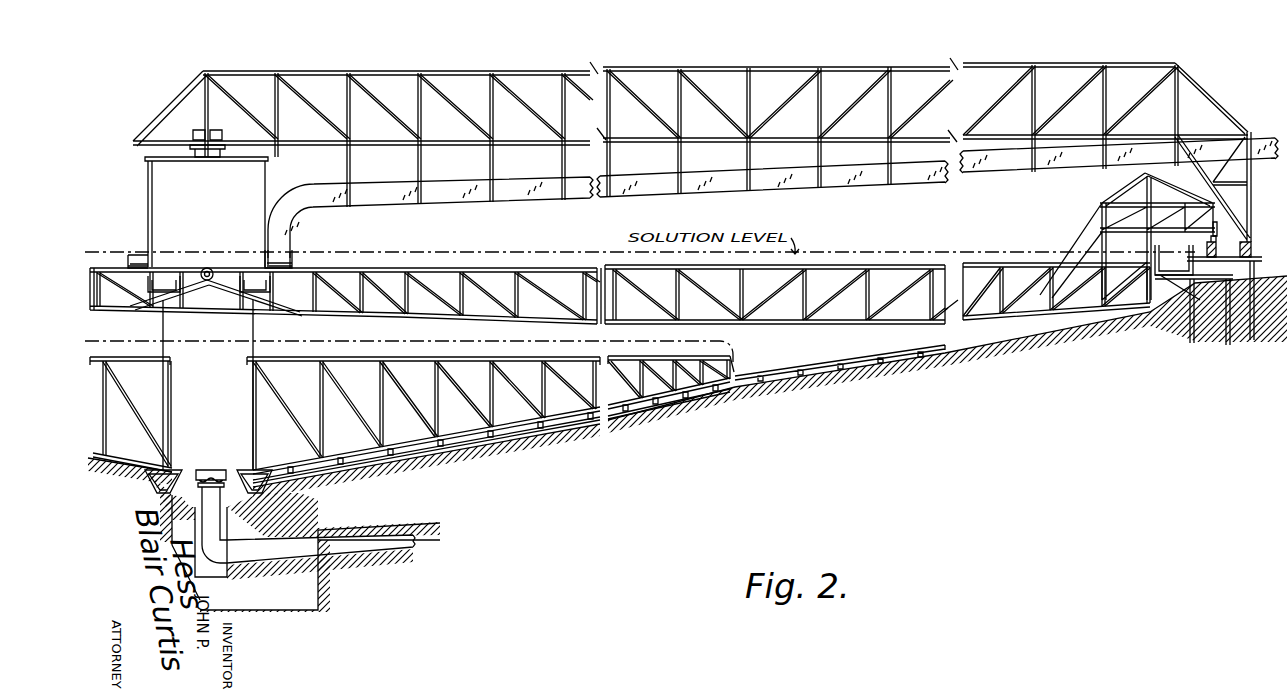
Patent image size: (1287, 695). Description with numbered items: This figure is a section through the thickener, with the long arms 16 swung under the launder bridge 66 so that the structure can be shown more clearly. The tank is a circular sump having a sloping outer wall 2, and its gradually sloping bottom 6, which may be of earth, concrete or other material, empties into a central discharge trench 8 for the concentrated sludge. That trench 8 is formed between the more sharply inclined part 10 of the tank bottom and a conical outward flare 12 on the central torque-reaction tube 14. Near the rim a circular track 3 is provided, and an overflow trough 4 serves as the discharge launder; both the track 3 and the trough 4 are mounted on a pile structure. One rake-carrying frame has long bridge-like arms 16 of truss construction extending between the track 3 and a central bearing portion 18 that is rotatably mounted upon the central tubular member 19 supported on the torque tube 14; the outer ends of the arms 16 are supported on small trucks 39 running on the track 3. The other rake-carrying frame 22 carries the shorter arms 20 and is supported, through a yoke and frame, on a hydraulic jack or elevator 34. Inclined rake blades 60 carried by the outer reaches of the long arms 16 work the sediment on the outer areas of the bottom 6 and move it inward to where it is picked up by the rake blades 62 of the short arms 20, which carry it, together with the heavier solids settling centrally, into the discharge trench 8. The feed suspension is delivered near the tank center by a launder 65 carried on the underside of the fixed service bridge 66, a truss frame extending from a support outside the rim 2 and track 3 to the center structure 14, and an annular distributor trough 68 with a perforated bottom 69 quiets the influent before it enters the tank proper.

The sloping outer wall 2 is at (1203, 288).
The circular track 3 is at (1216, 240).
The overflow trough 4 is at (1163, 268).
The tank bottom 6 is at (1054, 313).
The central discharge trench 8 is at (233, 493).
The sharply inclined part of tank bottom 10 is at (538, 424).
The conical outward flare 12 is at (213, 497).
The torque-reaction tube 14 is at (196, 476).
The long arms 16 is at (855, 258).
The central bearing portion 18 is at (265, 176).
The central tubular member 19 is at (207, 157).
The short arms 20 is at (529, 345).
The short-arm rake-carrying frame 22 is at (264, 333).
The hydraulic jack or elevator 34 is at (227, 518).
The truck 39 is at (1222, 220).
The rake blades 60 is at (874, 359).
The rake blades 62 is at (584, 418).
The launder 65 is at (528, 202).
The service bridge 66 is at (709, 58).
The annular distributor trough 68 is at (135, 262).
The perforated bottom 69 is at (150, 262).